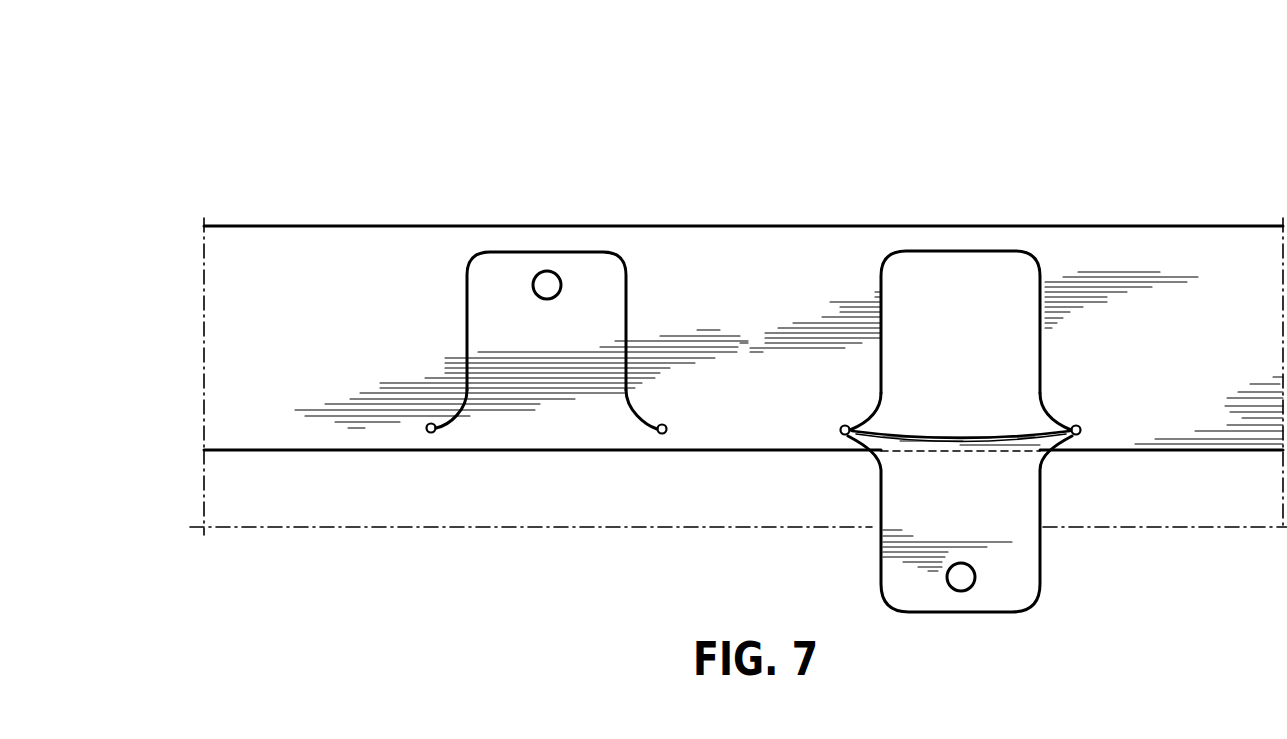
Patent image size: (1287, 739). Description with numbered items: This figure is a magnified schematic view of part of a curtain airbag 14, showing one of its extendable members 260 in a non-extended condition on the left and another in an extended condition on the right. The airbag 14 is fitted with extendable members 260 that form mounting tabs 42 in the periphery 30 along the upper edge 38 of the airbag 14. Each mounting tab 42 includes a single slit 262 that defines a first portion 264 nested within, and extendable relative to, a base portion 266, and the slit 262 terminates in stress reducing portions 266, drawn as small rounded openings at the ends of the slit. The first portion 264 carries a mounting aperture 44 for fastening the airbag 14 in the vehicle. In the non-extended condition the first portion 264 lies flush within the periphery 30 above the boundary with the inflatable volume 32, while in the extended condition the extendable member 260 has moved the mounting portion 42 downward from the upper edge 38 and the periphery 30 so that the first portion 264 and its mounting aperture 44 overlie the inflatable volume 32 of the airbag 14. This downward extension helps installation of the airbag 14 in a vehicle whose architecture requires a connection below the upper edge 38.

The airbag 14 is at (392, 136).
The periphery 30 is at (248, 365).
The inflatable volume 32 is at (252, 494).
The upper edge 38 is at (1123, 226).
The mounting tab 42 is at (514, 150).
The mounting aperture 44 is at (547, 280).
The extendable member 260 is at (500, 254).
The slit 262 is at (627, 312).
The first portion 264 is at (552, 318).
The stress reducing portions 266 is at (431, 432).